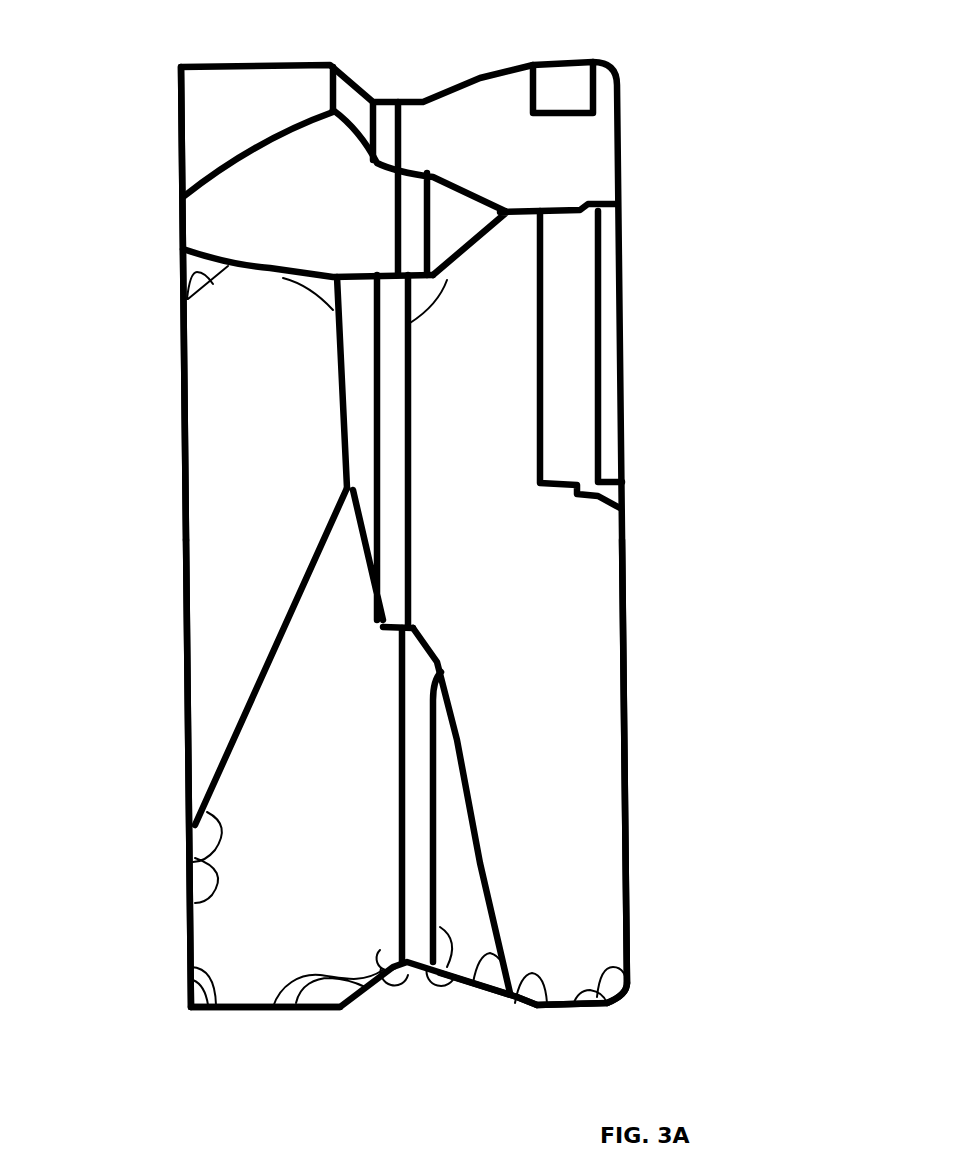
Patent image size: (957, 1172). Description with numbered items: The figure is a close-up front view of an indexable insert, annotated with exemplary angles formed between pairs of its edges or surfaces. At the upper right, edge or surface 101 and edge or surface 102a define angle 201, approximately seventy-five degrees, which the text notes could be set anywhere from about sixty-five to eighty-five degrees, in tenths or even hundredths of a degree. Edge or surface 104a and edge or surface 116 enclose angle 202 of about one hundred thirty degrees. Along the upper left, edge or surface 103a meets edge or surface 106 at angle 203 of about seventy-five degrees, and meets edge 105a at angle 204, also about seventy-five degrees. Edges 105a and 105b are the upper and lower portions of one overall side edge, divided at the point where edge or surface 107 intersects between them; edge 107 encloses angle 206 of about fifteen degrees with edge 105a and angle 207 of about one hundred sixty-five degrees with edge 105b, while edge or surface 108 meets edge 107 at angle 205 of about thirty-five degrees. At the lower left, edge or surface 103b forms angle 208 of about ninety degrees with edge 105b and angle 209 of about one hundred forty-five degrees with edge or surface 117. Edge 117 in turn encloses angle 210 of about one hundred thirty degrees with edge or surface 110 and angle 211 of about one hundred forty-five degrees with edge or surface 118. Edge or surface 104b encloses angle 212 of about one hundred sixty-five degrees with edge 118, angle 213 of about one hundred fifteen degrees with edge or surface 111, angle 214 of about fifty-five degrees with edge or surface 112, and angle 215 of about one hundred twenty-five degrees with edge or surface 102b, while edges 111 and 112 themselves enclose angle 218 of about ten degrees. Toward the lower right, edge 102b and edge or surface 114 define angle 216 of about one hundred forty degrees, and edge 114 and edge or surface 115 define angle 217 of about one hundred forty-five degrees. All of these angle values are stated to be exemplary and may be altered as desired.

The edge or surface 101 is at (623, 322).
The edge or surface 102a is at (562, 197).
The edge or surface 102b is at (583, 993).
The edge or surface 103a is at (270, 262).
The edge or surface 103b is at (236, 1008).
The edge or surface 104a is at (440, 277).
The edge or surface 104b is at (480, 990).
The edge 105a is at (182, 430).
The edge 105b is at (190, 955).
The edge or surface 106 is at (335, 355).
The edge or surface 107 is at (360, 537).
The edge or surface 108 is at (365, 557).
The edge or surface 110 is at (400, 840).
The edge or surface 111 is at (440, 897).
The edge or surface 112 is at (482, 860).
The edge or surface 114 is at (627, 997).
The edge or surface 115 is at (632, 942).
The edge or surface 116 is at (412, 398).
The edge or surface 117 is at (390, 980).
The edge or surface 118 is at (423, 973).
The angle 201 is at (620, 210).
The angle 202 is at (447, 310).
The angle 203 is at (327, 280).
The angle 204 is at (180, 278).
The angle 205 is at (300, 548).
The angle 206 is at (222, 742).
The angle 207 is at (195, 903).
The angle 208 is at (195, 967).
The angle 209 is at (277, 1010).
The angle 210 is at (380, 950).
The angle 211 is at (403, 980).
The angle 212 is at (433, 990).
The angle 213 is at (400, 923).
The angle 214 is at (477, 973).
The angle 215 is at (523, 993).
The angle 216 is at (583, 1003).
The angle 217 is at (607, 980).
The angle 218 is at (470, 803).